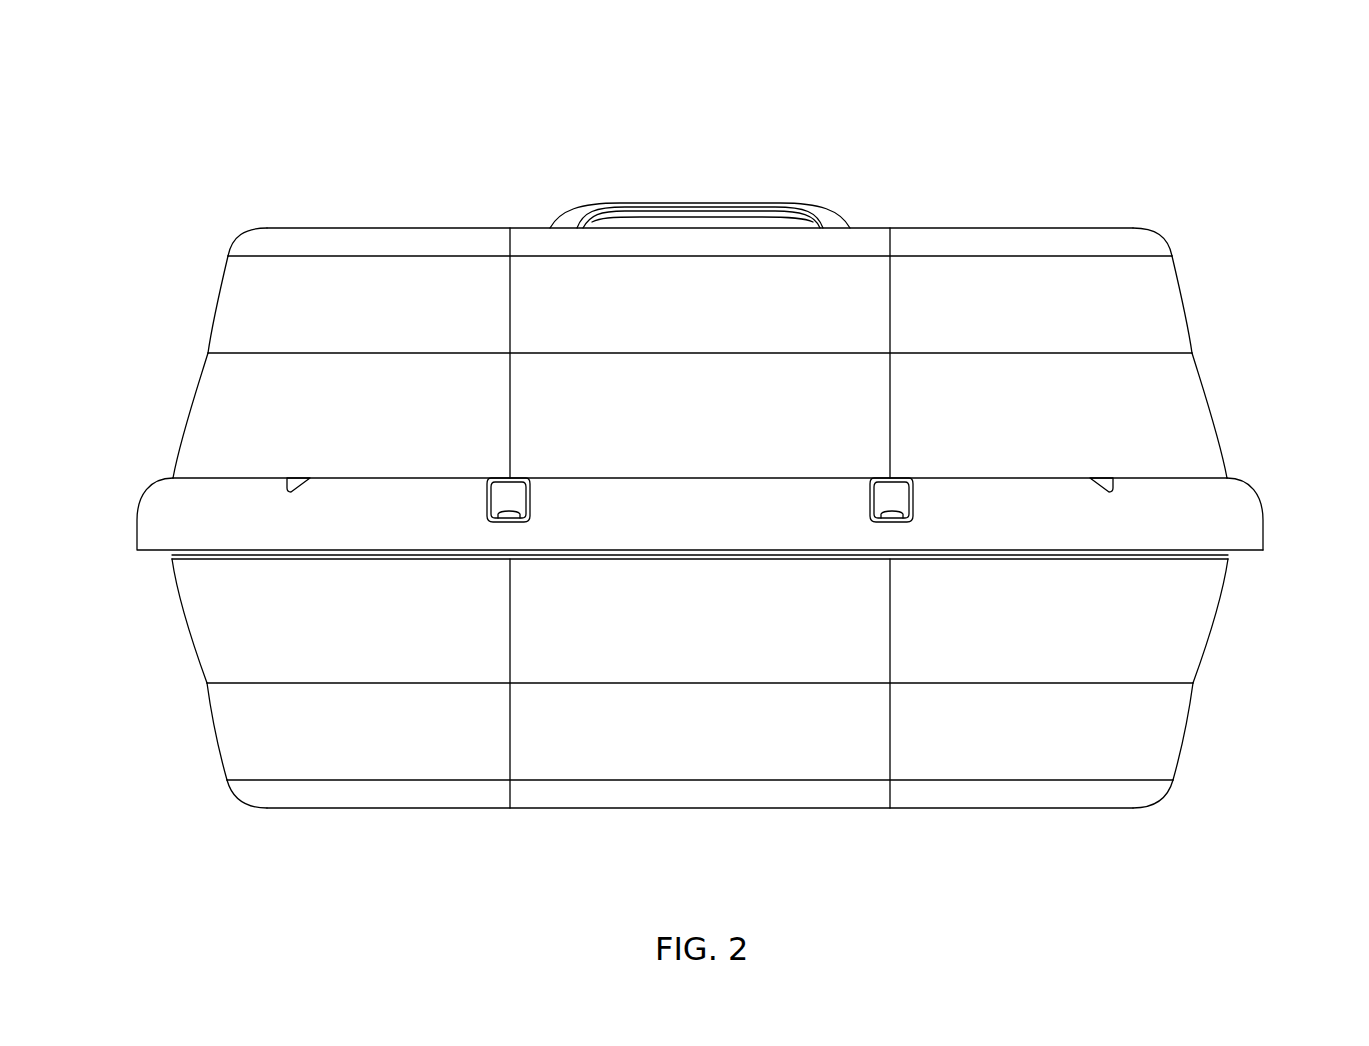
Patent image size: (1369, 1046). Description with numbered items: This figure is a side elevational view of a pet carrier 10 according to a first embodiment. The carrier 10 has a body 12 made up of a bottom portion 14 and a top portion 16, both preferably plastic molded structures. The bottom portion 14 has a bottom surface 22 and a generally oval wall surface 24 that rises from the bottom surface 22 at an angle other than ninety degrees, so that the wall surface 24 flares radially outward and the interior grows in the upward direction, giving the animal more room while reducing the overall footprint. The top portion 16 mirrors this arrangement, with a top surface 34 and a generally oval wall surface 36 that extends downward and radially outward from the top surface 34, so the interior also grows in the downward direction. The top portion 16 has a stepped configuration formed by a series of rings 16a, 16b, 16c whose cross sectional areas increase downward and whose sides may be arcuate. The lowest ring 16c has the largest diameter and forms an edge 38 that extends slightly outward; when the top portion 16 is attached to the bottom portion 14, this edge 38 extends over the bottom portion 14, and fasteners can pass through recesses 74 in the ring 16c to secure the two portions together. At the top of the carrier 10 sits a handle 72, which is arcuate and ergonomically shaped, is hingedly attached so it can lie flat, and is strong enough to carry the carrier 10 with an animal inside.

The carrier 10 is at (1038, 106).
The body 12 is at (168, 383).
The bottom portion 14 is at (208, 718).
The top portion 16 is at (175, 446).
The ring 16a is at (1187, 292).
The ring 16b is at (1220, 410).
The ring 16c is at (1258, 503).
The bottom surface 22 is at (347, 808).
The wall surface 24 is at (226, 779).
The top surface 34 is at (283, 228).
The wall surface 36 is at (212, 297).
The edge 38 is at (140, 552).
The handle 72 is at (570, 213).
The recess 74 is at (515, 497).